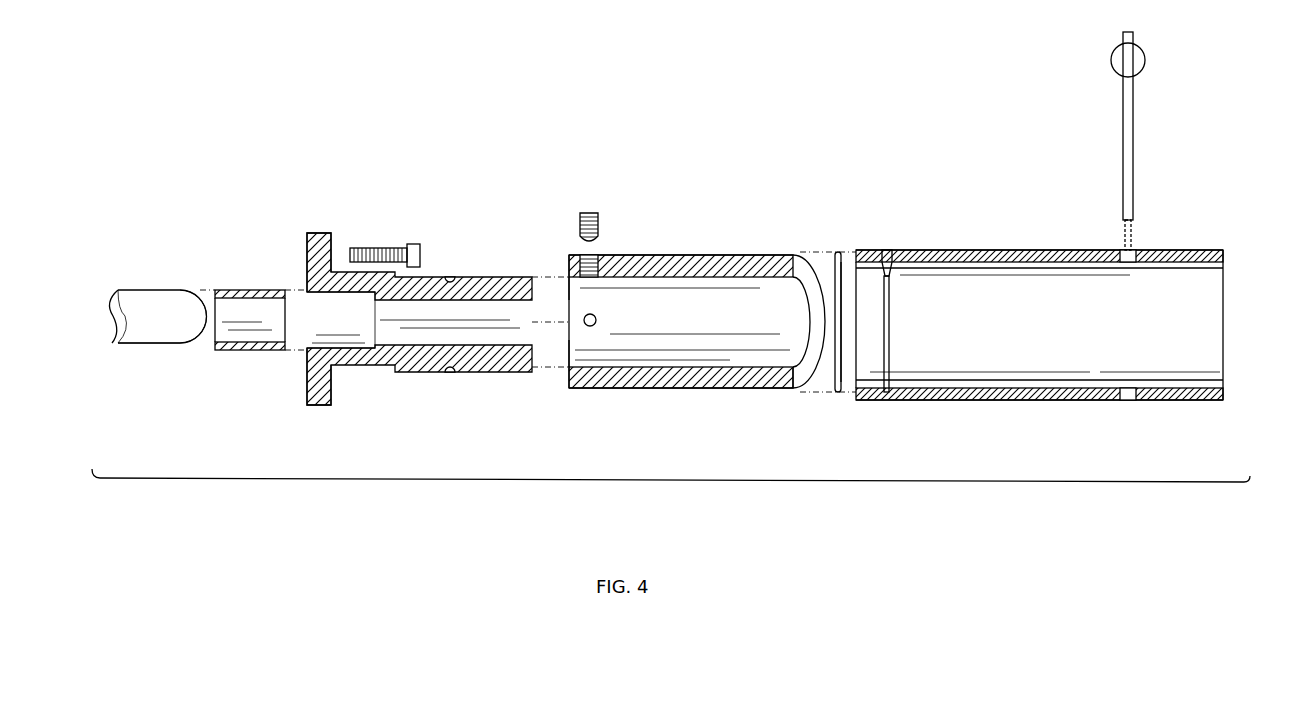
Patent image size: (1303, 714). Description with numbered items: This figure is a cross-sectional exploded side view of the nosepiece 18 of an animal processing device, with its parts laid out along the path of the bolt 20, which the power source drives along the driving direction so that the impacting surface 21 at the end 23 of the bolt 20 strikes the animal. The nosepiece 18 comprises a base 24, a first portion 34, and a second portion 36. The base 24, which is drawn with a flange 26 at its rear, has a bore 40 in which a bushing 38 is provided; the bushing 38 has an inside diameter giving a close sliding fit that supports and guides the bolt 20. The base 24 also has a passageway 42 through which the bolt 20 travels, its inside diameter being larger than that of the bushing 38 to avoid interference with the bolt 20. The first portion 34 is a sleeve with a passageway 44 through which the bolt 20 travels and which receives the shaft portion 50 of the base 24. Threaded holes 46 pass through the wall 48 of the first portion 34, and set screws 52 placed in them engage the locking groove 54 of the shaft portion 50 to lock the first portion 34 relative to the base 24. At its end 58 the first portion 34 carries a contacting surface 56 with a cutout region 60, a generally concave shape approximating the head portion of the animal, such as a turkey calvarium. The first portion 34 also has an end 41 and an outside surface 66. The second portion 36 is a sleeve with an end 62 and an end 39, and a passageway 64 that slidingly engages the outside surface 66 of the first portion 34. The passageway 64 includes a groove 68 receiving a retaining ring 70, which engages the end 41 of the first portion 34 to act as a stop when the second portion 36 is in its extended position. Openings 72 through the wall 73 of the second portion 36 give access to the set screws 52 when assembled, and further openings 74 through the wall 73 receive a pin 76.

The nosepiece 18 is at (480, 486).
The bolt 20 is at (157, 322).
The impacting surface 21 is at (204, 300).
The end of bolt 23 is at (172, 335).
The base 24 is at (384, 282).
The mounting flange 26 is at (318, 234).
The first portion 34 is at (748, 390).
The second portion 36 is at (1034, 246).
The bushing 38 is at (258, 332).
The end of second portion 39 is at (841, 252).
The bore 40 is at (320, 317).
The end of first portion 41 is at (568, 297).
The passageway 42 is at (548, 335).
The passageway 44 is at (671, 307).
The threaded holes 46 is at (593, 259).
The wall 48 is at (647, 389).
The shaft portion 50 is at (507, 290).
The set screws 52 is at (592, 216).
The locking groove 54 is at (447, 273).
The contacting surface 56 is at (807, 368).
The end of first portion 58 is at (822, 275).
The cutout region 60 is at (802, 328).
The end of second portion 62 is at (1223, 345).
The passageway 64 is at (1170, 315).
The outside surface 66 is at (733, 255).
The groove 68 is at (878, 262).
The retaining ring 70 is at (838, 252).
The openings 72 is at (908, 252).
The wall 73 is at (1058, 394).
The openings 74 is at (1128, 252).
The pin 76 is at (1130, 136).